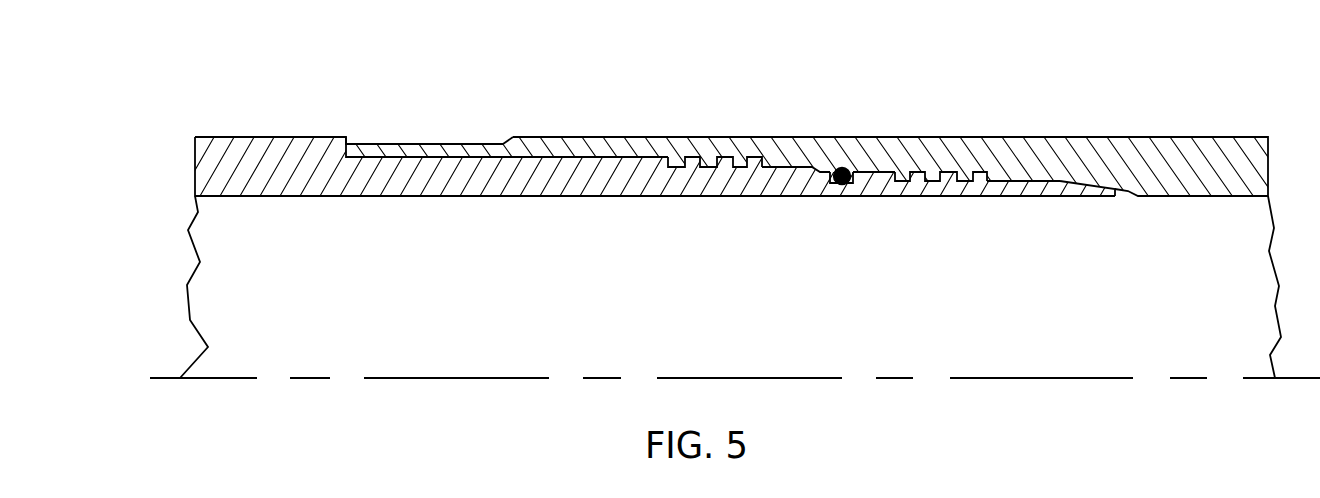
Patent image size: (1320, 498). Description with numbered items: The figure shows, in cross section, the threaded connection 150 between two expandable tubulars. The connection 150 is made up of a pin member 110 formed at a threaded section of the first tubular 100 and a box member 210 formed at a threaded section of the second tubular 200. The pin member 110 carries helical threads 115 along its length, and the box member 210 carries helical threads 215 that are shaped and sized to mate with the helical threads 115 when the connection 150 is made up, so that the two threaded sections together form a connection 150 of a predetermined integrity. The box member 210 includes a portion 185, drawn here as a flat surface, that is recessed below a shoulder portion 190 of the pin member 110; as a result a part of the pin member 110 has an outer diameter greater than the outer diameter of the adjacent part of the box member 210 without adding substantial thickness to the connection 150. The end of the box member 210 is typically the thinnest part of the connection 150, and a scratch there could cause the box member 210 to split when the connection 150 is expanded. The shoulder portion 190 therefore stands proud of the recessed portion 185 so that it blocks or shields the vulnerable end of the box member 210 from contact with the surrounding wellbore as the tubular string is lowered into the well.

The first tubular 100 is at (256, 150).
The pin member 110 is at (1073, 197).
The helical threads 115 is at (958, 177).
The threaded connection 150 is at (620, 65).
The portion 185 is at (429, 134).
The shoulder portion 190 is at (338, 143).
The second tubular 200 is at (1208, 157).
The box member 210 is at (878, 155).
The helical threads 215 is at (957, 172).